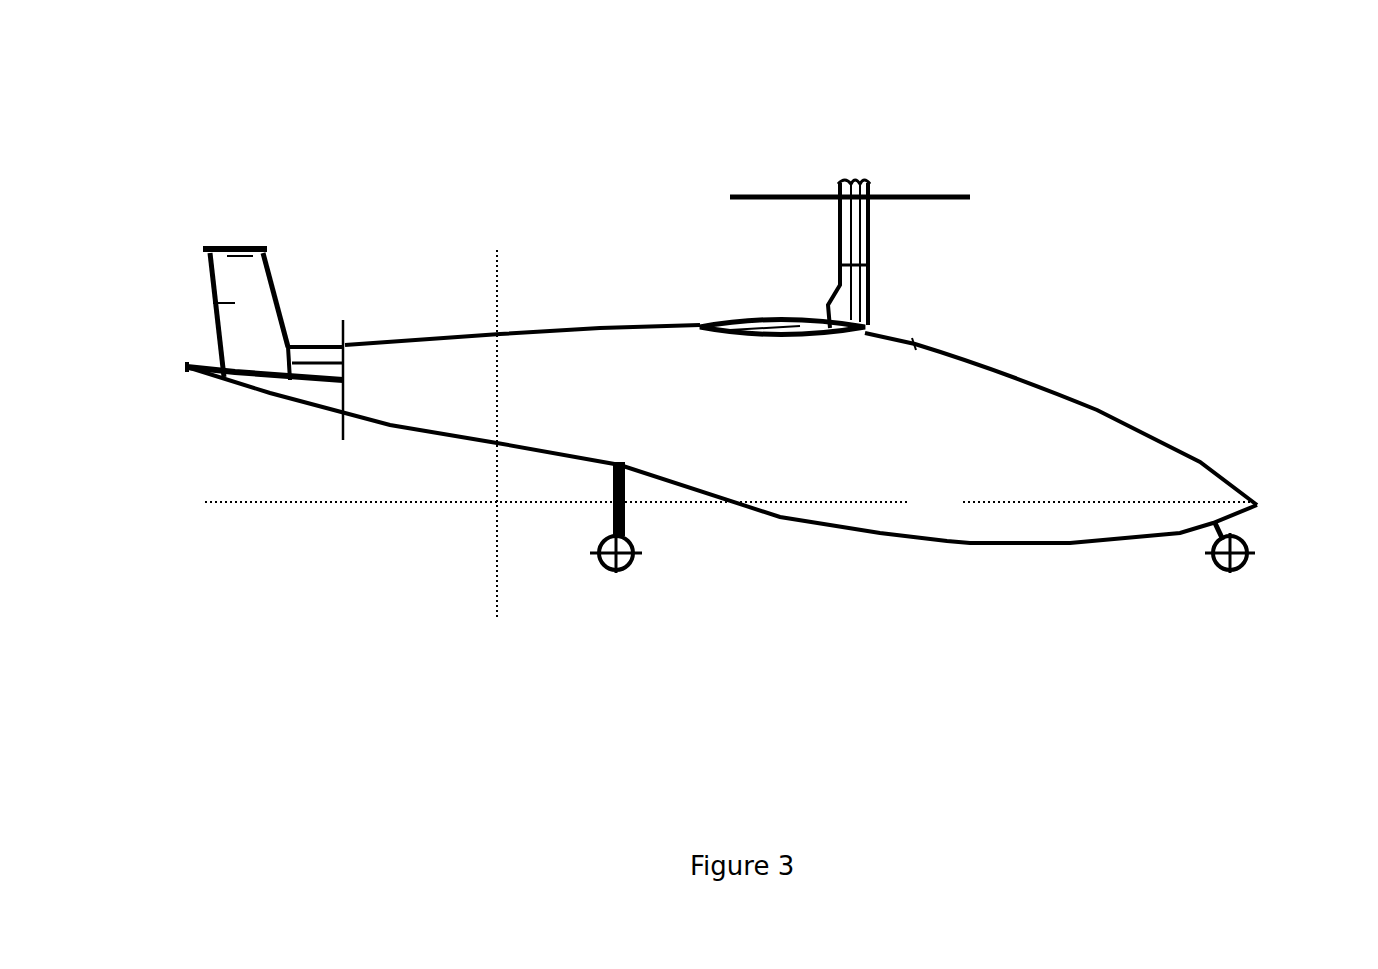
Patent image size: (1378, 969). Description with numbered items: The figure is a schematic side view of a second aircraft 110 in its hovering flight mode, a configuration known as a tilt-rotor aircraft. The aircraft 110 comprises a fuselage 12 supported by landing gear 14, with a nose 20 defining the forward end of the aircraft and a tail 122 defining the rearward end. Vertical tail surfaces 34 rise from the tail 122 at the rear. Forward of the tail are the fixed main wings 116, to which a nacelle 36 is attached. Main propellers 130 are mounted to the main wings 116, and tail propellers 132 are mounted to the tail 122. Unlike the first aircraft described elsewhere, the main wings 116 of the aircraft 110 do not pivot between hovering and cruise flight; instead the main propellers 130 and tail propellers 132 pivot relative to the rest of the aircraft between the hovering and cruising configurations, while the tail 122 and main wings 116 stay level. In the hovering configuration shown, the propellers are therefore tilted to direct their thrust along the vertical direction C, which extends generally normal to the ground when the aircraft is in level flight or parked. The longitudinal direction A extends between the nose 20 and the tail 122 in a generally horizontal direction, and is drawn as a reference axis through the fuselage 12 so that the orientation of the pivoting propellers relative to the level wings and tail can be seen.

The second aircraft 110 is at (512, 183).
The fuselage 12 is at (1102, 407).
The landing gear 14 is at (630, 570).
The nose 20 is at (1258, 495).
The vertical tail surfaces 34 is at (207, 308).
The nacelle 36 is at (863, 243).
The main wings 116 is at (752, 317).
The tail 122 is at (185, 370).
The main propellers 130 is at (945, 188).
The tail propellers 132 is at (343, 320).
The longitudinal direction A is at (1050, 502).
The vertical direction C is at (498, 592).